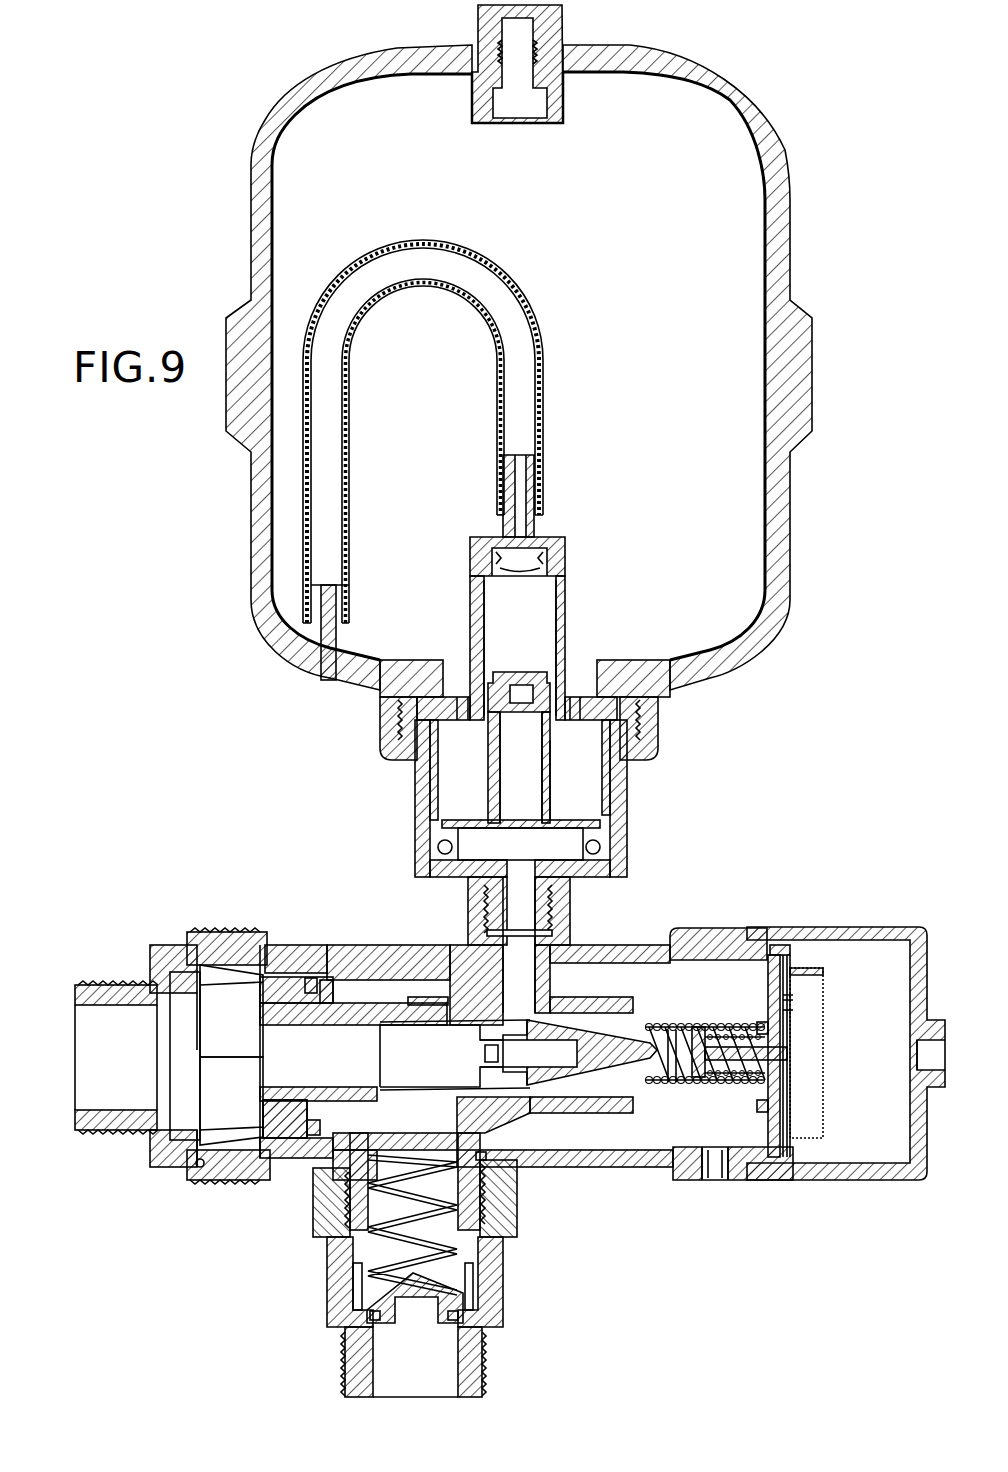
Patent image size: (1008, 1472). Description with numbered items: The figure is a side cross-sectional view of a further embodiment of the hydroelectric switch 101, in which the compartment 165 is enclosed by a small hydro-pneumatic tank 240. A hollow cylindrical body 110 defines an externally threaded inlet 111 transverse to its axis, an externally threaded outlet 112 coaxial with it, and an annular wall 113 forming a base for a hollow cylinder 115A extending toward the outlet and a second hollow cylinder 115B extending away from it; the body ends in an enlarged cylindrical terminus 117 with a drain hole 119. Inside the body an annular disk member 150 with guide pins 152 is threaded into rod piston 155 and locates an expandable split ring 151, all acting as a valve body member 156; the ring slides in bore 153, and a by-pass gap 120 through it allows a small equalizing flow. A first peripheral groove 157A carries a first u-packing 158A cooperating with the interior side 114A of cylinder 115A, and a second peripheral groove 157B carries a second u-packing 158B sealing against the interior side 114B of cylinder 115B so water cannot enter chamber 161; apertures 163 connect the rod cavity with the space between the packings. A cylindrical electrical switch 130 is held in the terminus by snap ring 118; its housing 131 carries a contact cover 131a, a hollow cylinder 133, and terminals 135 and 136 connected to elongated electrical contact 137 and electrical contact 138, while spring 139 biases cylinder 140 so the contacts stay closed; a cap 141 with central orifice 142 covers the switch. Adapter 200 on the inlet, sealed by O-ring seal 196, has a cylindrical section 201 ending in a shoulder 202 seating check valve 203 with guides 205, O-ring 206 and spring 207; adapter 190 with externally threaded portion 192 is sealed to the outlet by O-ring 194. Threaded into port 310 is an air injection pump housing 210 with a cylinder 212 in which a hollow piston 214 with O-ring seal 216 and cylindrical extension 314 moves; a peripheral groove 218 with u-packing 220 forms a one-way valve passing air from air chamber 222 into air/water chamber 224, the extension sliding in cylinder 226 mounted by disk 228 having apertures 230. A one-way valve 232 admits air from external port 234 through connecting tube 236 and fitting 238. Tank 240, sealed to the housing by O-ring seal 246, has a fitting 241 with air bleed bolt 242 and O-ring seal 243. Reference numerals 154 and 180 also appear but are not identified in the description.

The hydroelectric switch 101 is at (655, 888).
The hollow cylindrical body 110 is at (283, 942).
The externally threaded inlet 111 is at (353, 1196).
The externally threaded outlet 112 is at (197, 1173).
The annular wall 113 is at (498, 990).
The interior side of cylinder 115a 114A is at (437, 988).
The interior side of second hollow cylinder 114B is at (637, 973).
The hollow cylinder 115A is at (487, 985).
The second hollow cylinder 115B is at (606, 1110).
The enlarged cylindrical terminus 117 is at (712, 938).
The snap ring 118 is at (783, 945).
The drain hole 119 is at (717, 1170).
The by-pass gap 120 is at (290, 948).
The cylindrical electrical switch 130 is at (832, 905).
The housing 131 is at (786, 1158).
The contact cover 131a is at (807, 1140).
The hollow cylinder 133 is at (740, 1037).
The electrical terminal 135 is at (768, 1110).
The electrical terminal 136 is at (770, 998).
The elongated electrical contact 137 is at (793, 1003).
The electrical contact 138 is at (790, 997).
The spring 139 is at (733, 1080).
The cylinder 140 is at (703, 1037).
The cap 141 is at (873, 927).
The central orifice 142 is at (925, 1053).
The annular disk member 150 is at (290, 1016).
The expandable split ring 151 is at (314, 1137).
The guide pins 152 is at (234, 1060).
The bore 153 is at (350, 968).
The lower bushing 154 is at (400, 1107).
The rod piston 155 is at (672, 1040).
The valve body member 156 is at (460, 1101).
The first peripheral groove 157A is at (437, 1023).
The second peripheral groove 157B is at (557, 1040).
The first u-packing 158A is at (417, 998).
The second u-packing 158B is at (553, 1013).
The chamber 161 is at (643, 1140).
The apertures 163 is at (497, 1073).
The compartment 165 is at (652, 216).
The spring end 180 is at (675, 1083).
The internally threaded adapter 190 is at (93, 1037).
The externally threaded portion 192 is at (110, 983).
The O-ring 194 is at (200, 1165).
The O-ring seal 196 is at (482, 1160).
The internally threaded adapter 200 is at (500, 1213).
The cylindrical section 201 is at (505, 1286).
The shoulder 202 is at (477, 1303).
The check valve 203 is at (377, 1298).
The guides 205 is at (470, 1276).
The O-ring 206 is at (372, 1319).
The spring 207 is at (355, 1231).
The air injection pump housing 210 is at (422, 804).
The cylinder 212 is at (613, 777).
The hollow piston 214 is at (572, 818).
The O-ring seal 216 is at (597, 842).
The peripheral groove 218 is at (491, 678).
The u-packing 220 is at (545, 703).
The air chamber 222 is at (499, 593).
The air/water chamber 224 is at (457, 777).
The cylinder 226 is at (478, 628).
The disk 228 is at (436, 697).
The apertures 230 is at (577, 697).
The one-way valve 232 is at (552, 556).
The external port 234 is at (325, 666).
The connecting tube 236 is at (349, 422).
The fitting 238 is at (503, 527).
The hydro-pneumatic tank 240 is at (283, 118).
The fitting 241 is at (472, 105).
The air bleed bolt 242 is at (563, 25).
The O-ring seal 243 is at (548, 50).
The O-ring seal 246 is at (634, 740).
The port 310 is at (567, 893).
The cylindrical extension 314 is at (553, 747).